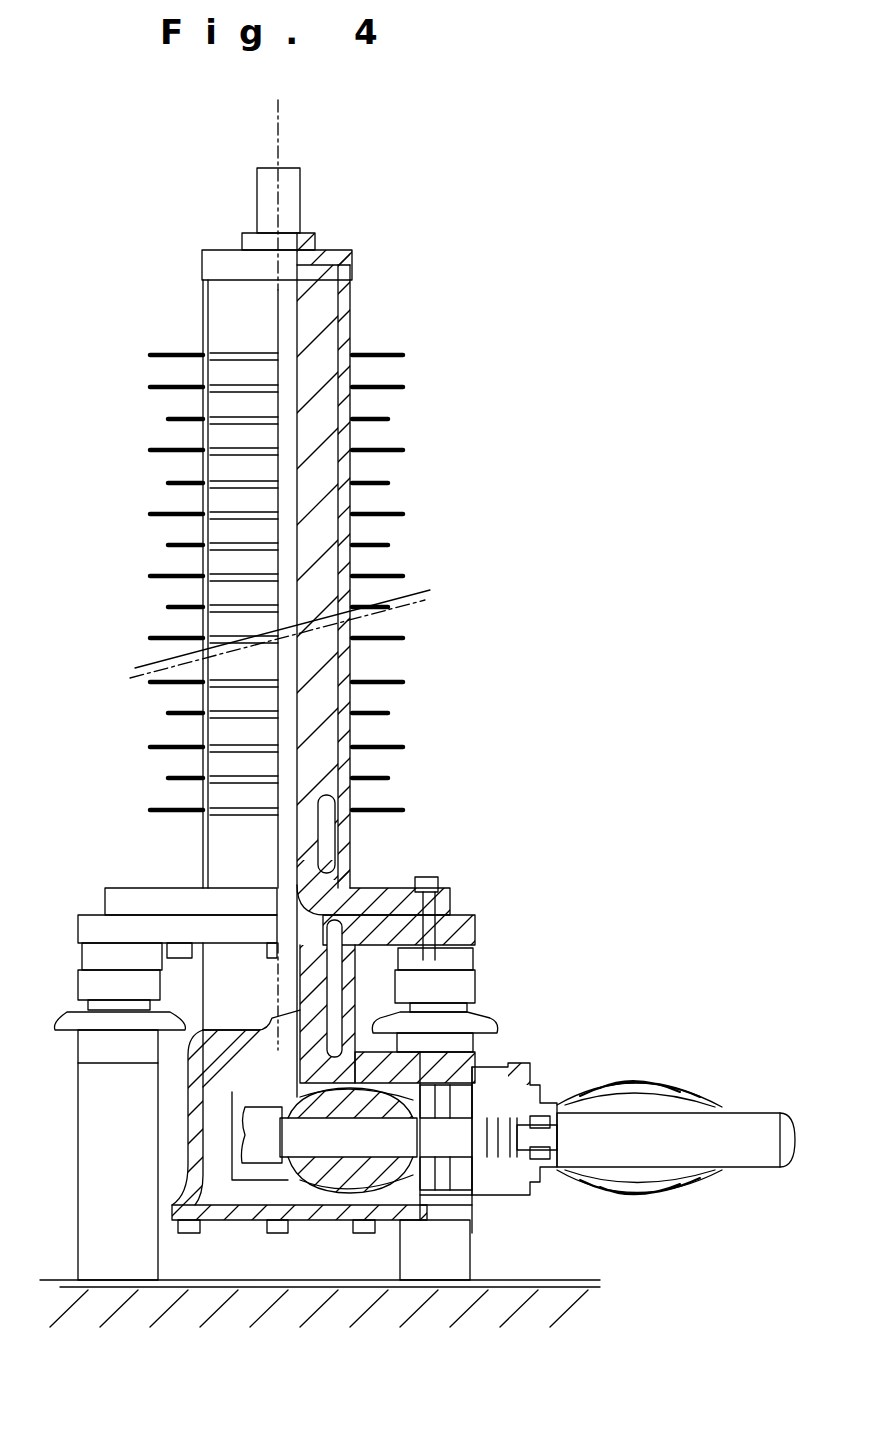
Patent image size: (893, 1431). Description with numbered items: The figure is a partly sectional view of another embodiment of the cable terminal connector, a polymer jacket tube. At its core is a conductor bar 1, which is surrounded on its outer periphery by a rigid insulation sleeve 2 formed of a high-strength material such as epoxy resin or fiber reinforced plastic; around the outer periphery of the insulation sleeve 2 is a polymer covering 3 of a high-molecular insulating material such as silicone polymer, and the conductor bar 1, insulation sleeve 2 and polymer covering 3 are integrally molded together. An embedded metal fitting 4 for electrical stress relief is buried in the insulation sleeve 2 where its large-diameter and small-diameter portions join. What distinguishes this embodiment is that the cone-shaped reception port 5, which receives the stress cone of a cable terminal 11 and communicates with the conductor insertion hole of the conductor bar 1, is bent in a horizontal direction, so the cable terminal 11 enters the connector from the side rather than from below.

The conductor bar 1 is at (287, 348).
The rigid insulation sleeve 2 is at (315, 463).
The polymer covering 3 is at (383, 565).
The embedded metal fitting 4 is at (362, 895).
The cone-shaped reception port 5 is at (335, 1173).
The cable terminal 11 is at (623, 1202).